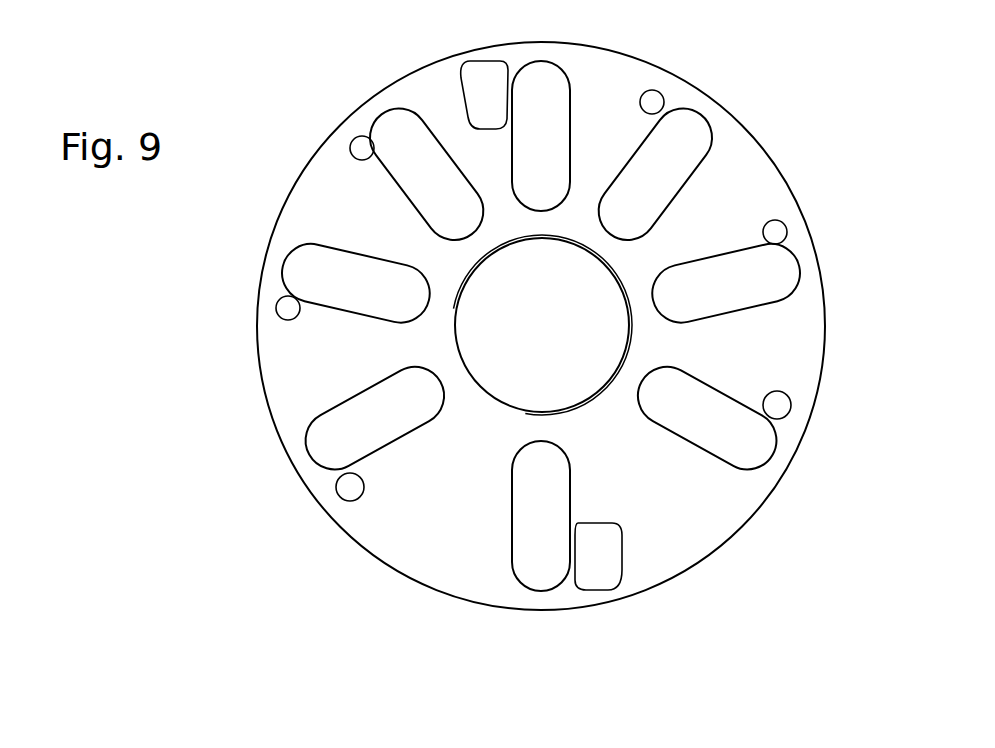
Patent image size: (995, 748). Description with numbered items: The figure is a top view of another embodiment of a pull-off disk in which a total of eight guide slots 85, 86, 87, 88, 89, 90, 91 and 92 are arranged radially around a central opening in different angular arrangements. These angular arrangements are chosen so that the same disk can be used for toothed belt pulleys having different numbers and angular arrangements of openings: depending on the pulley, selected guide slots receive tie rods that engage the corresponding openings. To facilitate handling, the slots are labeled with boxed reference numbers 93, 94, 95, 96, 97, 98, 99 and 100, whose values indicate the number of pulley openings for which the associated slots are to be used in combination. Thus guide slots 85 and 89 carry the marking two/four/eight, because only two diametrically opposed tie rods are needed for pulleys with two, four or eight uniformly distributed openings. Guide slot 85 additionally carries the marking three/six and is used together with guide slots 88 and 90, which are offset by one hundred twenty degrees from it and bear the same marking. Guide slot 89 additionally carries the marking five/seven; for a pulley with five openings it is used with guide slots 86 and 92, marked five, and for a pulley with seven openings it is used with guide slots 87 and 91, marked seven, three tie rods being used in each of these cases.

The guide slot 85 is at (553, 75).
The guide slot 86 is at (700, 128).
The guide slot 87 is at (788, 280).
The guide slot 88 is at (757, 460).
The guide slot 89 is at (520, 577).
The guide slot 90 is at (317, 447).
The guide slot 91 is at (293, 257).
The guide slot 92 is at (398, 112).
The reference number 93 is at (486, 64).
The reference number 94 is at (659, 93).
The reference number 95 is at (785, 226).
The reference number 96 is at (791, 406).
The reference number 97 is at (598, 590).
The reference number 98 is at (342, 500).
The reference number 99 is at (277, 302).
The reference number 100 is at (352, 140).